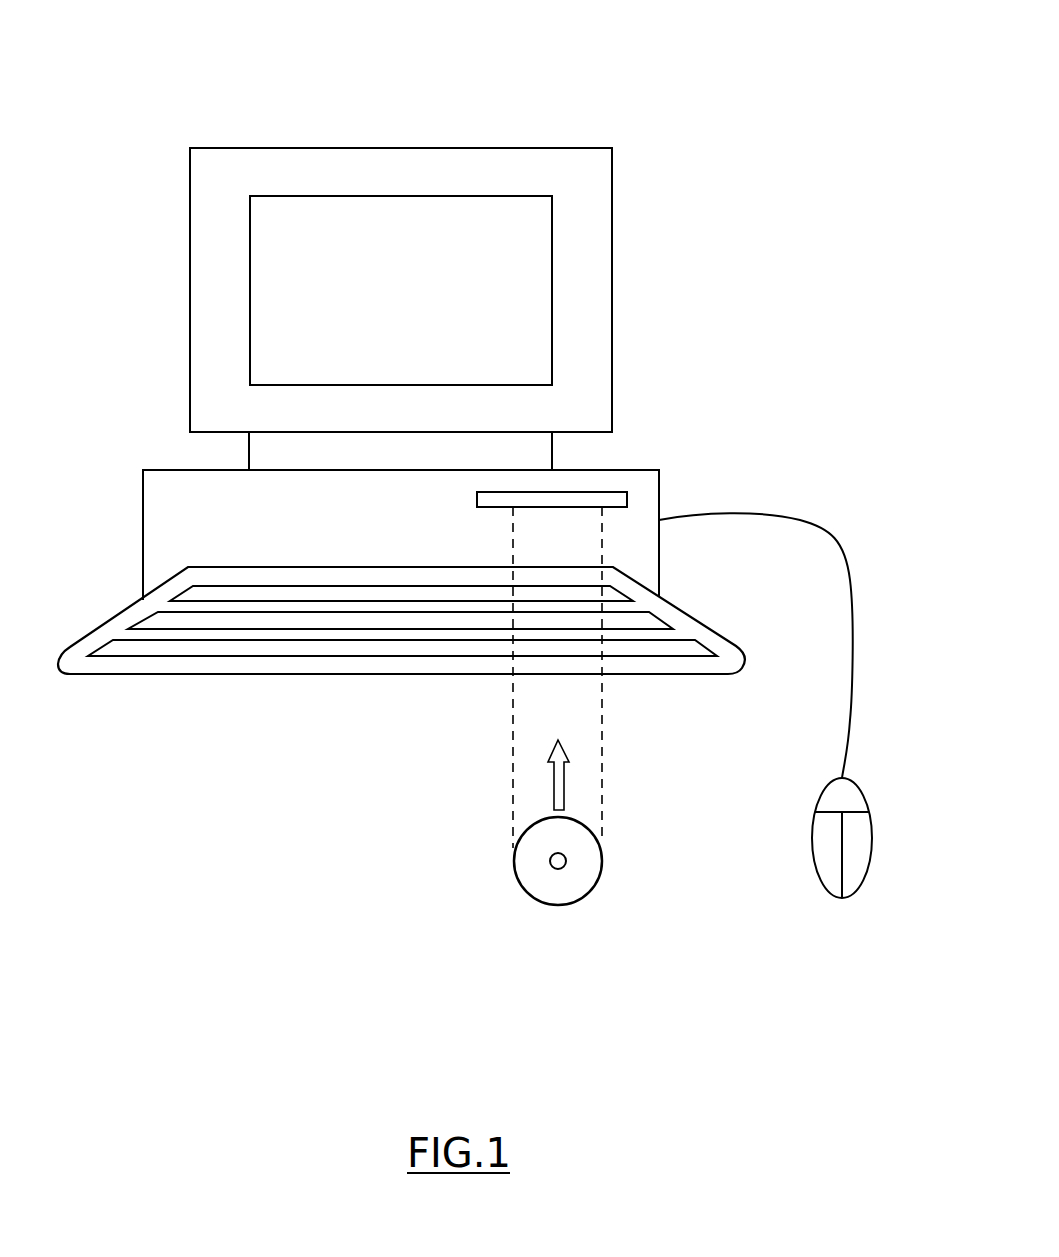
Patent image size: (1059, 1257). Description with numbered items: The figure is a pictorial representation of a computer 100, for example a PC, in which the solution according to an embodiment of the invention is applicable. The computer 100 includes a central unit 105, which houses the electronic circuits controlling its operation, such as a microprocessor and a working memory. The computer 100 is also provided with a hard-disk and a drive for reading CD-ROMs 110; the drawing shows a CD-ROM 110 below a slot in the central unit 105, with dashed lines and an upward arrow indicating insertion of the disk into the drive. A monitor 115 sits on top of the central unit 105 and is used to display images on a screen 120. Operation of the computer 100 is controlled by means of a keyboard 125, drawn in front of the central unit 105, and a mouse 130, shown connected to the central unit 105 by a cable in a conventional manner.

The computer 100 is at (706, 42).
The central unit 105 is at (167, 470).
The CD-ROM 110 is at (530, 826).
The monitor 115 is at (297, 148).
The screen 120 is at (524, 244).
The keyboard 125 is at (215, 674).
The mouse 130 is at (822, 790).